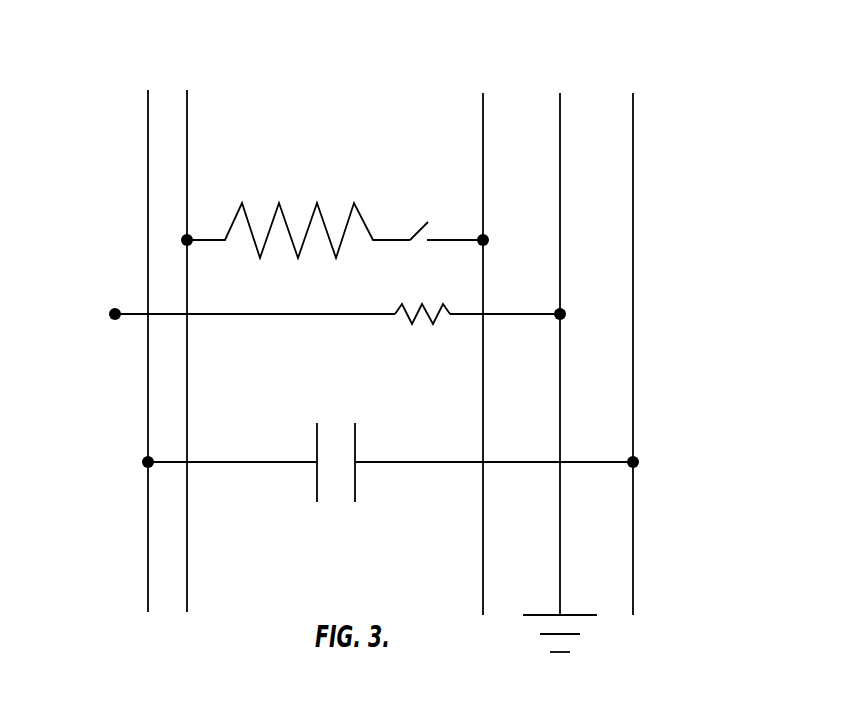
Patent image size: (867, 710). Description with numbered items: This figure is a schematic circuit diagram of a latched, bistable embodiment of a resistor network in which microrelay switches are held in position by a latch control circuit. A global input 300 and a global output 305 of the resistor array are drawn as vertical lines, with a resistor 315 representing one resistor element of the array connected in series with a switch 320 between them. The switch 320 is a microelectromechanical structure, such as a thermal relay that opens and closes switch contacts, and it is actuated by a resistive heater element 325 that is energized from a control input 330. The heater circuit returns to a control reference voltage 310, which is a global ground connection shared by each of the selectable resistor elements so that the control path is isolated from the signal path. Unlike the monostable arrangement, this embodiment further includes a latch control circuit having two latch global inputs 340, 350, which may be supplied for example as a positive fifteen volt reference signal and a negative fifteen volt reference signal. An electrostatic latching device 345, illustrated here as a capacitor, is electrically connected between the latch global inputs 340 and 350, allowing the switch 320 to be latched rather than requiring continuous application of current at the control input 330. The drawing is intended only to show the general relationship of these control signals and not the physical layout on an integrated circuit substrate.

The global input 300 is at (187, 125).
The global output 305 is at (483, 132).
The control reference voltage 310 is at (560, 127).
The resistor 315 is at (313, 207).
The switch 320 is at (422, 222).
The resistive heater element 325 is at (415, 325).
The control input 330 is at (115, 308).
The latch global input 340 is at (148, 233).
The electrostatic latching device 345 is at (315, 428).
The latch global input 350 is at (633, 206).